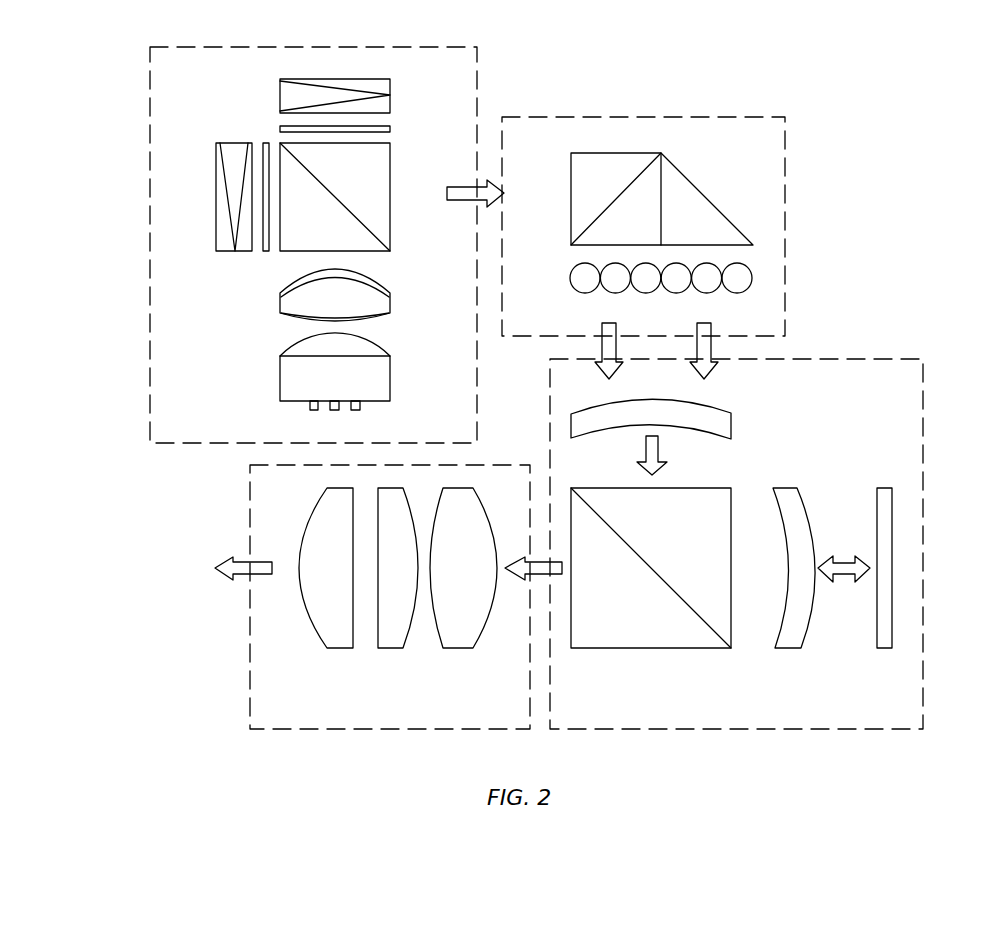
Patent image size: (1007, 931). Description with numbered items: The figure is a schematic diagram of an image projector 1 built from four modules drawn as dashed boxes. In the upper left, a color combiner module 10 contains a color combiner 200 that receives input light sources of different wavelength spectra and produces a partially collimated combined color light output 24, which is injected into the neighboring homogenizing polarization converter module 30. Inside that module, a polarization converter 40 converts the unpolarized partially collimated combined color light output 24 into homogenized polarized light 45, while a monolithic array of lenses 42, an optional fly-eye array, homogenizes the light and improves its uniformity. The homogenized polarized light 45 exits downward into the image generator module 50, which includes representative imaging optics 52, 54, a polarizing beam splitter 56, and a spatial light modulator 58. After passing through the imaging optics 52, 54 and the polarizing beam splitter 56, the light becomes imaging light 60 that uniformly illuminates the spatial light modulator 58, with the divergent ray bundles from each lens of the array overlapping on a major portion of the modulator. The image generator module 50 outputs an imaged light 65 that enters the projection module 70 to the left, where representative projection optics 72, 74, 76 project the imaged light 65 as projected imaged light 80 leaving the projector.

The image projector 1 is at (897, 128).
The color combiner module 10 is at (150, 287).
The color combiner 200 is at (414, 345).
The partially collimated combined color light output 24 is at (466, 201).
The homogenizing polarization converter module 30 is at (787, 216).
The polarization converter 40 is at (712, 197).
The monolithic array of lenses 42 is at (569, 280).
The homogenized polarized light 45 is at (683, 333).
The image generator module 50 is at (925, 470).
The imaging optics 52 is at (733, 428).
The imaging optics 54 is at (785, 487).
The polarizing beam splitter 56 is at (666, 650).
The spatial light modulator 58 is at (883, 487).
The imaging light 60 is at (845, 578).
The imaged light 65 is at (540, 578).
The projection module 70 is at (250, 628).
The projection optics 72 is at (342, 650).
The projection optics 74 is at (393, 650).
The projection optics 76 is at (458, 650).
The projected imaged light 80 is at (257, 560).